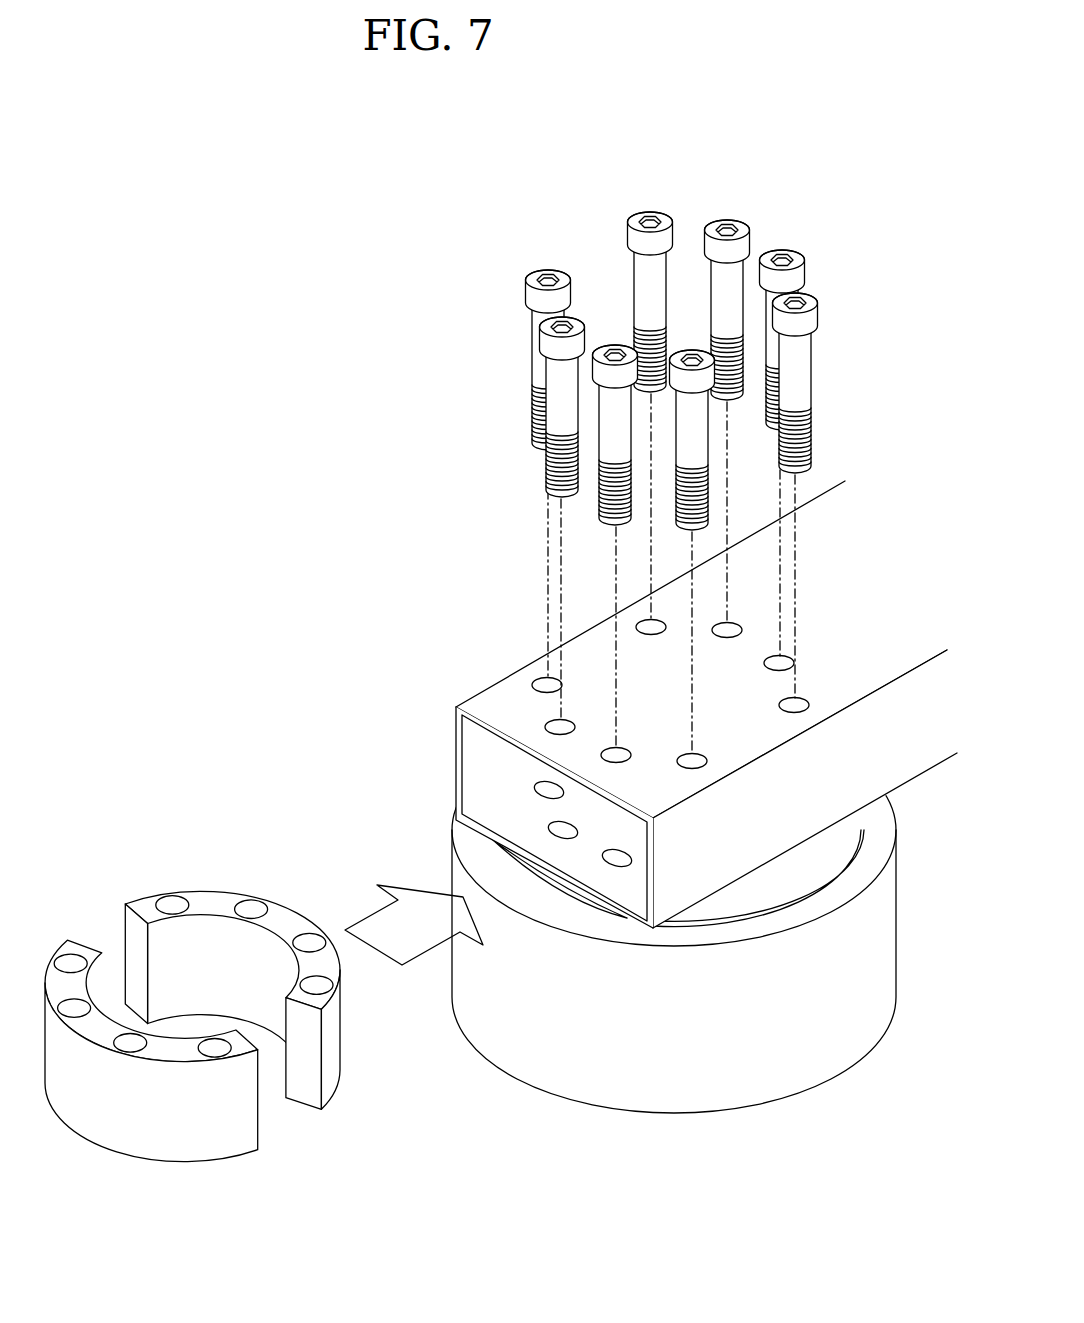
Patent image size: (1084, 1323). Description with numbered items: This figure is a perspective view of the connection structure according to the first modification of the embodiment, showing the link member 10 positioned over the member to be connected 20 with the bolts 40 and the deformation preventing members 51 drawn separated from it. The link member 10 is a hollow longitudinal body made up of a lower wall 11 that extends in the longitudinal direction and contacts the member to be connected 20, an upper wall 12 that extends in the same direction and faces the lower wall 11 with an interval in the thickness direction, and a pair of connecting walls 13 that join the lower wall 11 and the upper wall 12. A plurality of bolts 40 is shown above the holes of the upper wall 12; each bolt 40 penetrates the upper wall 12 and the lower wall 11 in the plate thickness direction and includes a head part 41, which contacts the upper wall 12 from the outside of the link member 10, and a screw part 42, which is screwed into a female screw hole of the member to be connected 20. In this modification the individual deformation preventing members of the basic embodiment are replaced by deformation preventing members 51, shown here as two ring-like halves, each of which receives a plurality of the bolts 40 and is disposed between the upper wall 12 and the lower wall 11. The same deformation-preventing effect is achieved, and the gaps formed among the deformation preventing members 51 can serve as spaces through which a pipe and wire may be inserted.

The link member 10 is at (692, 704).
The lower wall 11 is at (496, 817).
The upper wall 12 is at (497, 705).
The connecting walls 13 is at (477, 740).
The member to be connected 20 is at (805, 863).
The bolts 40 is at (691, 329).
The head part 41 is at (818, 318).
The screw part 42 is at (812, 419).
The deformation preventing members 51 is at (340, 1043).